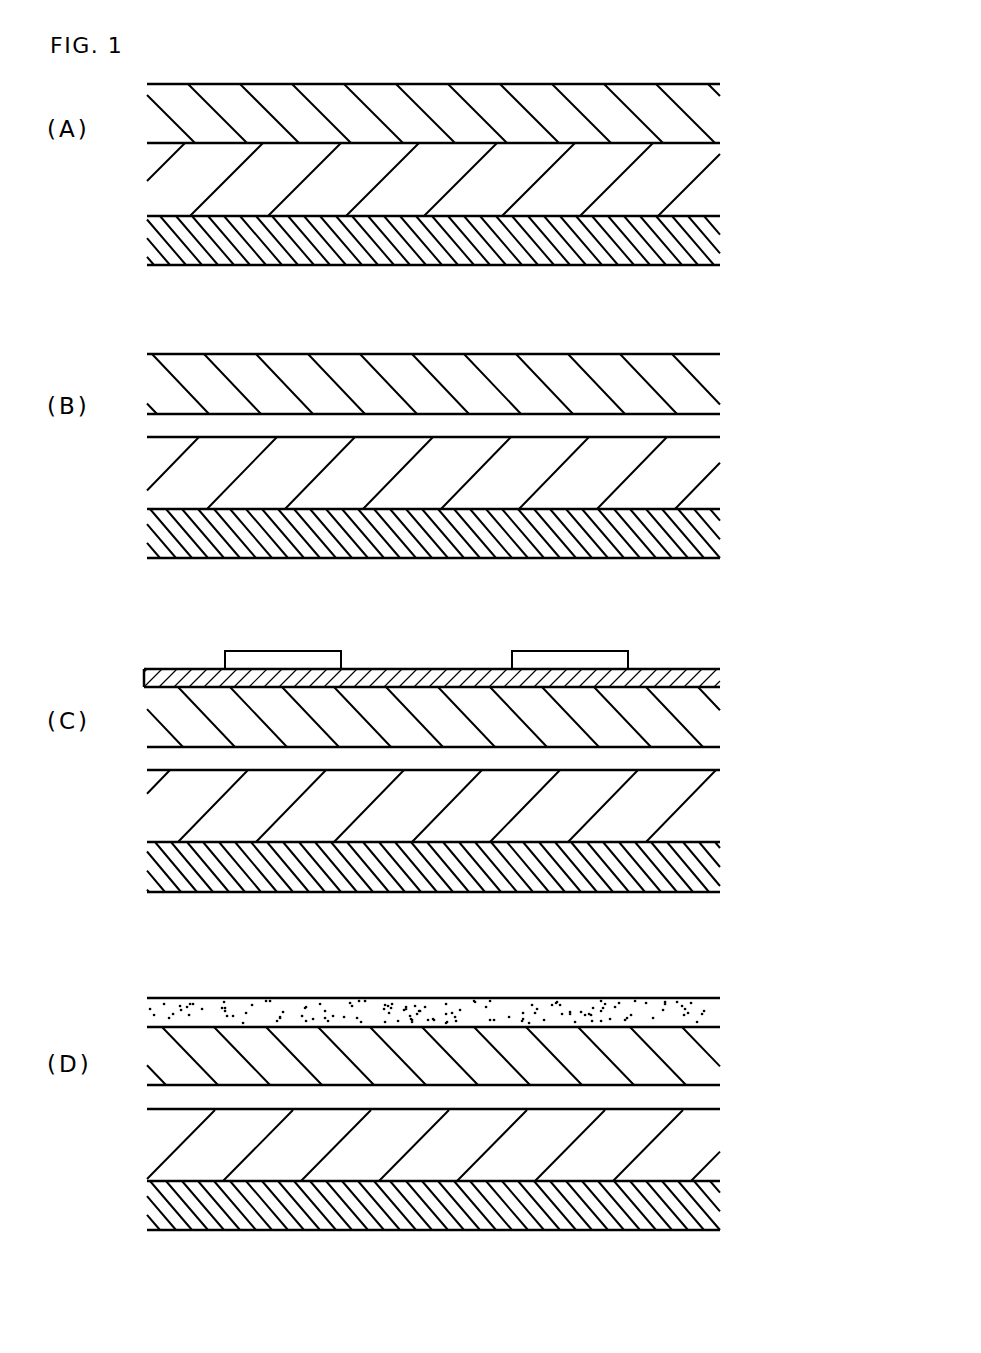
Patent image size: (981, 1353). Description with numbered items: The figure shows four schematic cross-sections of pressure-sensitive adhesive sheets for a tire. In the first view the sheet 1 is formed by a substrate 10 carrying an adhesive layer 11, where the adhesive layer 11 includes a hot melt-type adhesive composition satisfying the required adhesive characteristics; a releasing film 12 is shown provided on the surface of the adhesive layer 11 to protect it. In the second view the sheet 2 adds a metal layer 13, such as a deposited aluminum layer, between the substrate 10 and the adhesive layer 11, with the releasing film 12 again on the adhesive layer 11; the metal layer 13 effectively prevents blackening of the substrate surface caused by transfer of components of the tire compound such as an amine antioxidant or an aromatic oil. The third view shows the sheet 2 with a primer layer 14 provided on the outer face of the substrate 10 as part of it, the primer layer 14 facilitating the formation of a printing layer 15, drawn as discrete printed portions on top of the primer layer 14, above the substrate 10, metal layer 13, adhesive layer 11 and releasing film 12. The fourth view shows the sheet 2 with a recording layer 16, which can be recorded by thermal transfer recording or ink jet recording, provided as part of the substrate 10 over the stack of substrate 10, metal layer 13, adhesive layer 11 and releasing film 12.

The pressure-sensitive adhesive sheet for a tire 1 is at (852, 100).
The pressure-sensitive adhesive sheet for a tire 2 is at (852, 370).
The substrate 10 is at (490, 584).
The adhesive layer 11 is at (490, 662).
The releasing film 12 is at (490, 723).
The metal layer 13 is at (490, 765).
The primer layer 14 is at (489, 681).
The printing layer 15 is at (600, 649).
The recording layer 16 is at (490, 1013).